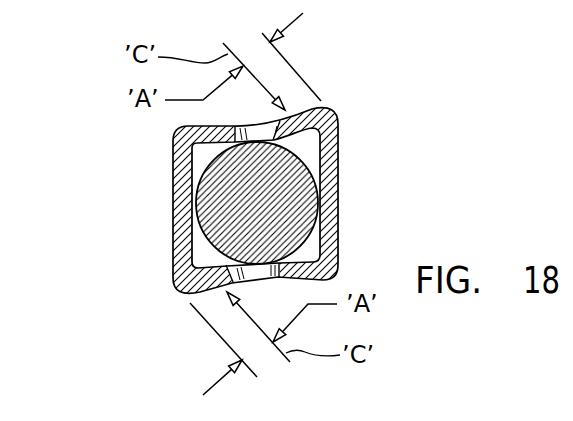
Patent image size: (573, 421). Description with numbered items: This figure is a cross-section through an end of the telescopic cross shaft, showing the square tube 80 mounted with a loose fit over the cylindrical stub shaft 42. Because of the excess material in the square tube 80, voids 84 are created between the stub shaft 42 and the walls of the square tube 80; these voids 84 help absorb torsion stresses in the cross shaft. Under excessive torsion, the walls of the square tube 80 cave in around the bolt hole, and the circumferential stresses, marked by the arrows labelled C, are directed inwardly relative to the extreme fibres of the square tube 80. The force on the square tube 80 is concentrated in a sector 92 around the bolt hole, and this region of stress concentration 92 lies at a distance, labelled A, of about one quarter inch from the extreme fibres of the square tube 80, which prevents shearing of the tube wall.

The square tube 80 is at (266, 201).
The void 84 is at (310, 147).
The stub shaft 42 is at (205, 163).
The sector of stress concentration 92 is at (285, 113).